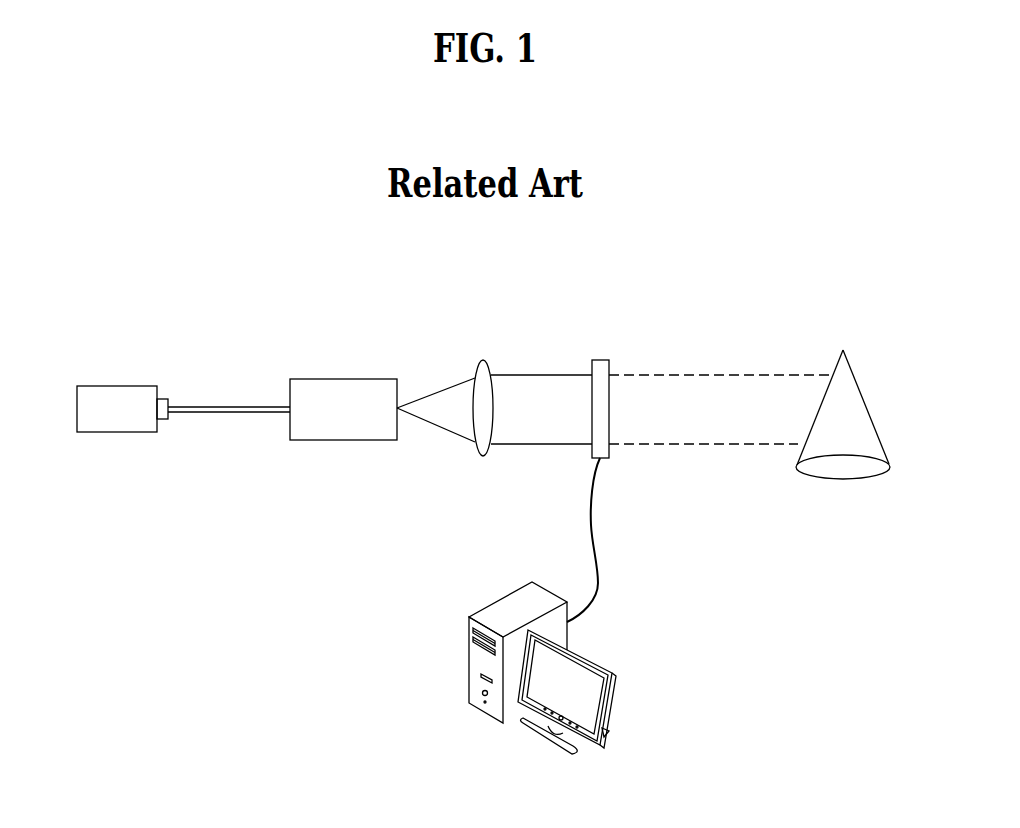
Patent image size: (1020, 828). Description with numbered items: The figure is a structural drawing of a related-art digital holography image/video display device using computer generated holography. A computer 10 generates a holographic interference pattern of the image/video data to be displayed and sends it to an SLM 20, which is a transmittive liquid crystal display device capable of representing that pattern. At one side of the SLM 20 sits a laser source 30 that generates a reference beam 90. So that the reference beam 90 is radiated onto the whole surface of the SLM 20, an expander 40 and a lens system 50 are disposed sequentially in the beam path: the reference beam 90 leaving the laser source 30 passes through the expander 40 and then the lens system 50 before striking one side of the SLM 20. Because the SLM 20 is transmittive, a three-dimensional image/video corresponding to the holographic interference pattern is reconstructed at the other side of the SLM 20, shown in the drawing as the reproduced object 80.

The computer 10 is at (468, 657).
The SLM 20 is at (598, 358).
The laser source 30 is at (117, 433).
The expander 40 is at (343, 440).
The lens system 50 is at (483, 458).
The object 80 is at (845, 480).
The reference beam 90 is at (200, 403).